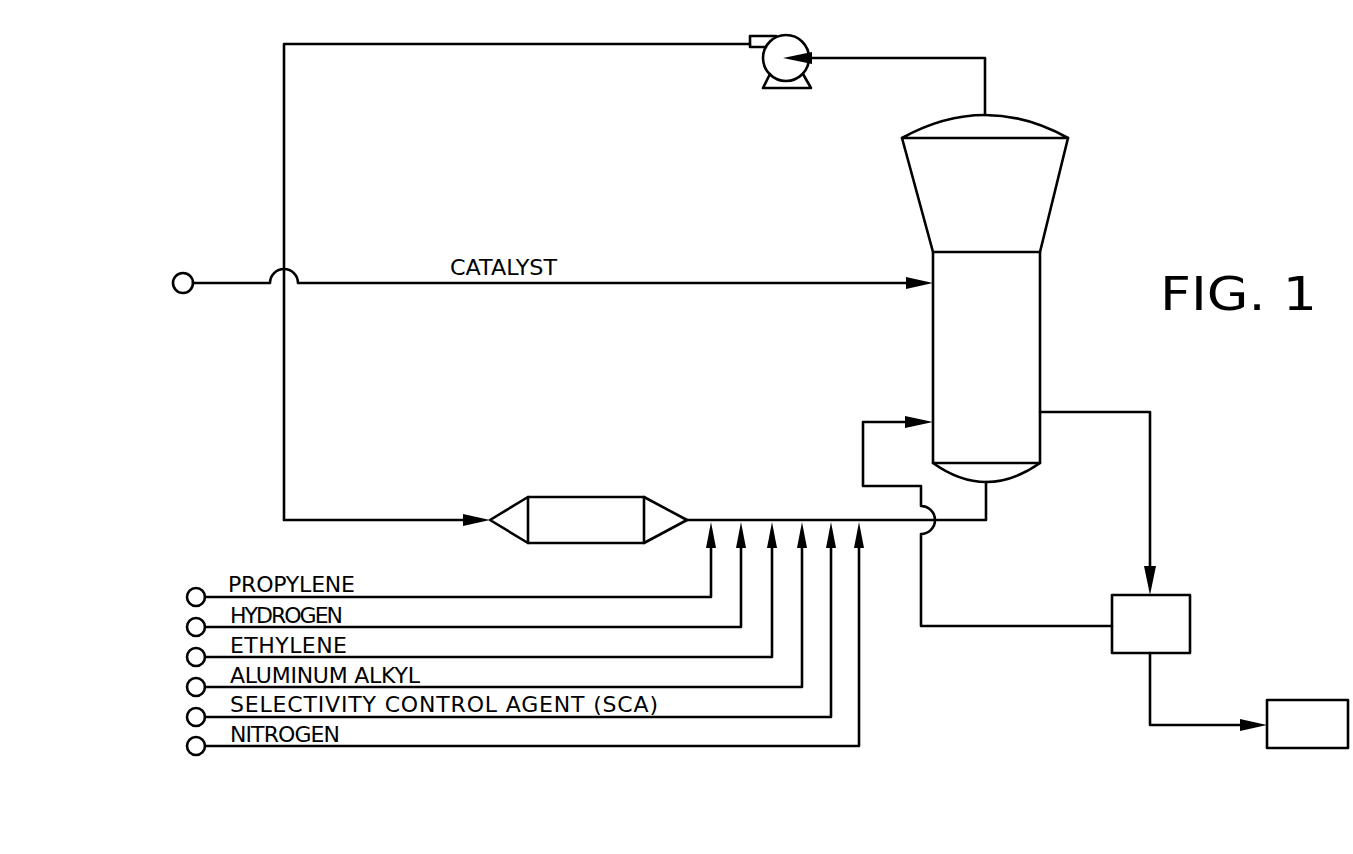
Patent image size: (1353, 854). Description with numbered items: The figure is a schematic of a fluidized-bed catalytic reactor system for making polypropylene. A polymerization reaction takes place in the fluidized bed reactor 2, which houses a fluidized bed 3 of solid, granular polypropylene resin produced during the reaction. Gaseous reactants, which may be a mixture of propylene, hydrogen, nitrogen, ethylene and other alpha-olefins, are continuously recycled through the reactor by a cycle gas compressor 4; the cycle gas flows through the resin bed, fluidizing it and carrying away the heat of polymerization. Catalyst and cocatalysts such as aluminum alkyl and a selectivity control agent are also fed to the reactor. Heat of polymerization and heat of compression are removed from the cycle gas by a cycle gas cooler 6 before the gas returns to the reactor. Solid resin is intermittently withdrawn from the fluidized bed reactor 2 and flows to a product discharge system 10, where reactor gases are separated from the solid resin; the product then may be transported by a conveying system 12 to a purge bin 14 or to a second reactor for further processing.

The fluidized bed reactor 2 is at (1062, 228).
The fluidized bed 3 is at (1040, 338).
The cycle gas compressor 4 is at (762, 68).
The cycle gas cooler 6 is at (623, 497).
The product discharge system 10 is at (1190, 622).
The conveying system 12 is at (1193, 725).
The purge bin 14 is at (1297, 700).